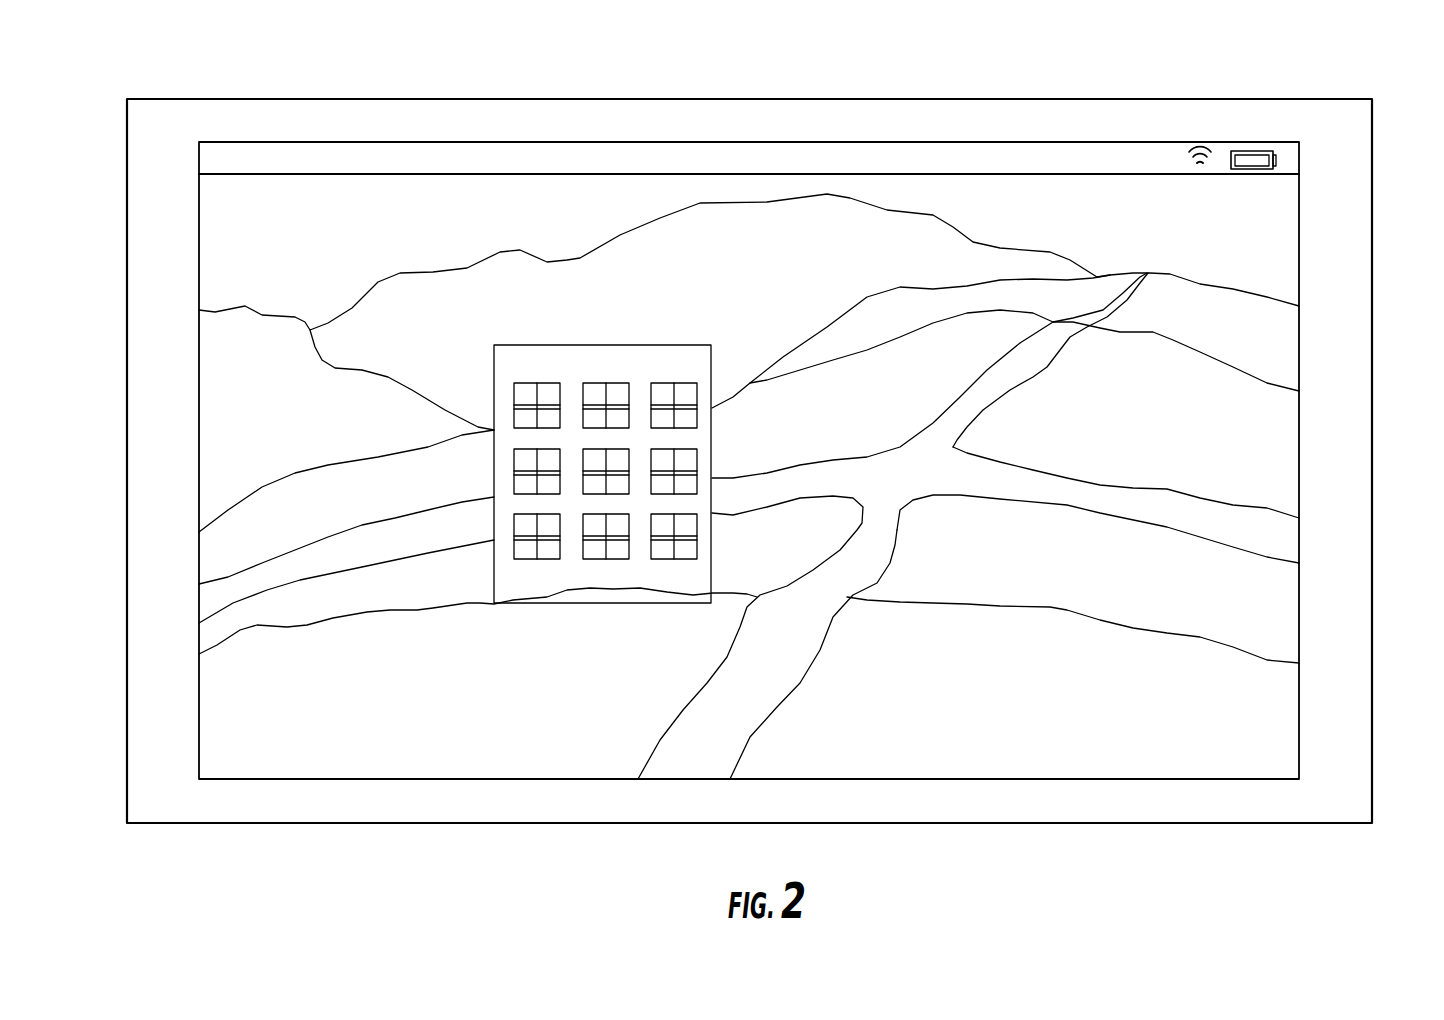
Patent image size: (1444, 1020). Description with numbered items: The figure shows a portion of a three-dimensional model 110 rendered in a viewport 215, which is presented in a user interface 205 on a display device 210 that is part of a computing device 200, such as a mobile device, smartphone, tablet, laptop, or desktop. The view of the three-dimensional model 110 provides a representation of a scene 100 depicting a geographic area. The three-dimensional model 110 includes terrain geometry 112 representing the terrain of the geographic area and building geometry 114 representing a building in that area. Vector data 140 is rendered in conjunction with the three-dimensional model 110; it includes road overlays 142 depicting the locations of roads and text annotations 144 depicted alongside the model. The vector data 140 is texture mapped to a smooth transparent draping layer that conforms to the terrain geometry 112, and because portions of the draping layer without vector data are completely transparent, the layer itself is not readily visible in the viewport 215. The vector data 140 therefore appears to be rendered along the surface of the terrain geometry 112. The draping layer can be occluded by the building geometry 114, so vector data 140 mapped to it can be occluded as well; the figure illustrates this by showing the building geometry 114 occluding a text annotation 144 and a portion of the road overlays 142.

The scene 100 is at (1283, 283).
The three-dimensional model 110 is at (1272, 583).
The terrain geometry 112 is at (920, 238).
The building geometry 114 is at (633, 360).
The vector data 140 is at (977, 423).
The road overlays 142 is at (843, 472).
The text annotations 144 is at (762, 478).
The computing device 200 is at (887, 94).
The user interface 205 is at (350, 157).
The display device 210 is at (1300, 160).
The viewport 215 is at (199, 240).